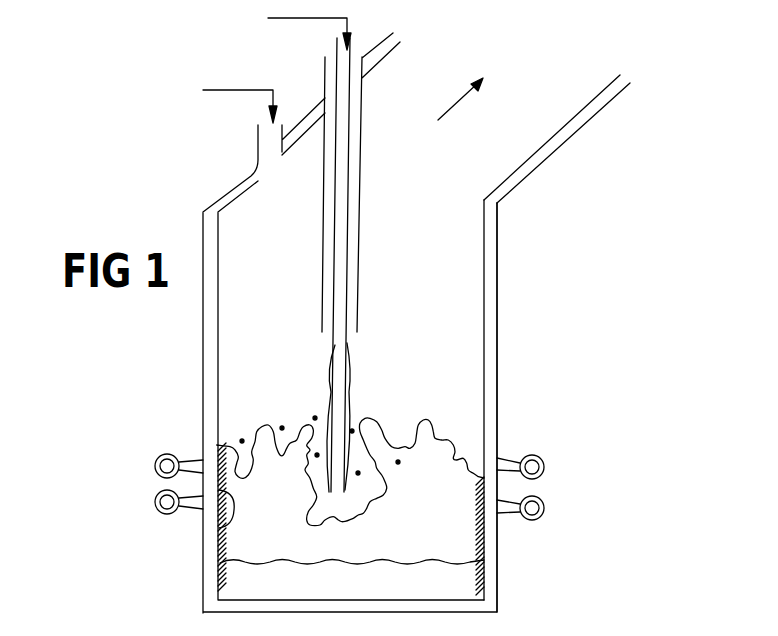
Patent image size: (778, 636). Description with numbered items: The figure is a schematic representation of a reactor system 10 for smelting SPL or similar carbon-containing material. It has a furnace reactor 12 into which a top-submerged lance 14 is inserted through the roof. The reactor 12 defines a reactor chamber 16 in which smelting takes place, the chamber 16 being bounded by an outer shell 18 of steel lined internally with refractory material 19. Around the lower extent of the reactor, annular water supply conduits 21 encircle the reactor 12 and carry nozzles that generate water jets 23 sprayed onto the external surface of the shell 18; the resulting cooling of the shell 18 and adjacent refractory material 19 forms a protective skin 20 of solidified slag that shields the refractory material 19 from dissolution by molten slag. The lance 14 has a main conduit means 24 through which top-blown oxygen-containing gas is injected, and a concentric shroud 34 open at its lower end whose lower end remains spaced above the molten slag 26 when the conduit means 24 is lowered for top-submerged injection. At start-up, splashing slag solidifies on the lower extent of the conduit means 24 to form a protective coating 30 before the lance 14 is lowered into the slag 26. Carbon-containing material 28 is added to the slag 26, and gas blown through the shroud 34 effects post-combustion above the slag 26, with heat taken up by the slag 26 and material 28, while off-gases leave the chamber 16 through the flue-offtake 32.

The reactor system 10 is at (518, 389).
The furnace reactor 12 is at (203, 413).
The top-submerged lance 14 is at (300, 204).
The reactor chamber 16 is at (435, 364).
The outer shell 18 is at (491, 309).
The refractory material 19 is at (490, 360).
The protective skin 20 is at (228, 522).
The annular water supply conduits 21 is at (150, 497).
The water jets 23 is at (193, 458).
The main conduit means 24 is at (346, 282).
The molten slag 26 is at (445, 518).
The carbon-containing material 28 is at (448, 583).
The coating of protective slag 30 is at (328, 372).
The flue-offtake 32 is at (543, 120).
The concentric shroud 34 is at (358, 240).